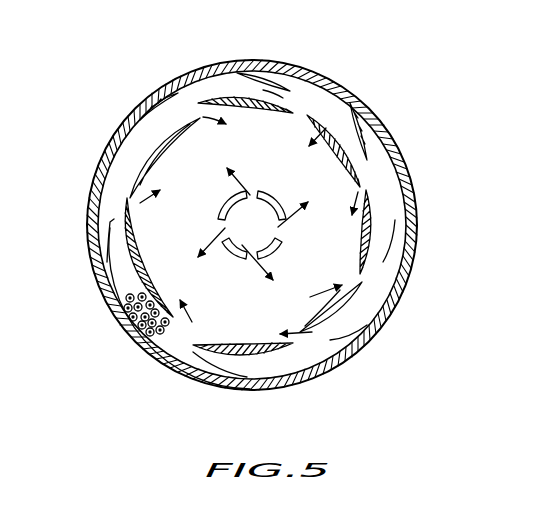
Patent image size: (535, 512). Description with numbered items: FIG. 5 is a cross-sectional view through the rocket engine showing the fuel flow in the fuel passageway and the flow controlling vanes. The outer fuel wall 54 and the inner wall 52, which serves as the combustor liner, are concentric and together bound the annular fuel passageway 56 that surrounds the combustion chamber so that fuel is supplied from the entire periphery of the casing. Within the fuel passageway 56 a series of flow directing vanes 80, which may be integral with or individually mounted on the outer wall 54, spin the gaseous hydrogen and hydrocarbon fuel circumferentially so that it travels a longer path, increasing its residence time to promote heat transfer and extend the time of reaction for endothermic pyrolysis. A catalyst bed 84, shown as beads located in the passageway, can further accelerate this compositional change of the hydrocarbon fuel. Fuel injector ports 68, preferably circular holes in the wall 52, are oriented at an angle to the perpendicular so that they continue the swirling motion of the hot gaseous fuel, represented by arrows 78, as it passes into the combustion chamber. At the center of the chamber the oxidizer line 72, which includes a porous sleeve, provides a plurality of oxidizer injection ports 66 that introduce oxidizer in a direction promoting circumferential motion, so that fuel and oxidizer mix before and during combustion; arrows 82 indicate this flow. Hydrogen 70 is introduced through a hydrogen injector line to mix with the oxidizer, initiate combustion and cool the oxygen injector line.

The wall 52 is at (243, 343).
The fuel wall 54 is at (325, 82).
The fuel passageway 56 is at (388, 198).
The oxidizer injection ports 66 is at (248, 192).
The fuel injector ports 68 is at (150, 212).
The hydrogen 70 is at (220, 203).
The oxidizer line 72 is at (260, 229).
The arrows 78 is at (197, 125).
The flow directing vanes 80 is at (272, 82).
The flow arrow 82 is at (287, 216).
The catalyst bed 84 is at (135, 335).